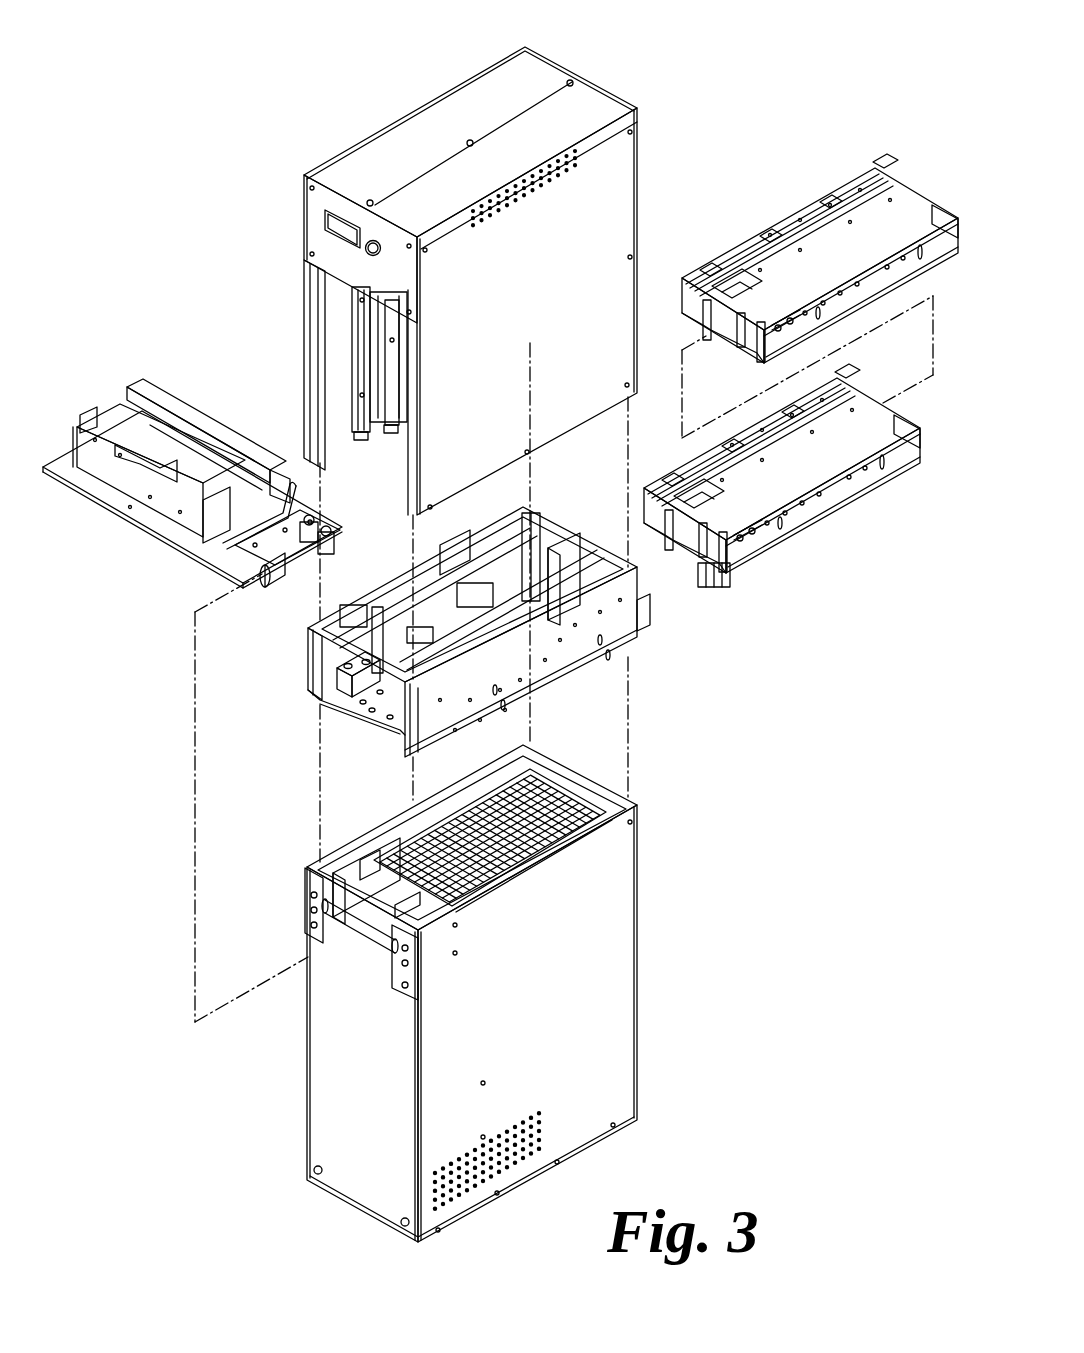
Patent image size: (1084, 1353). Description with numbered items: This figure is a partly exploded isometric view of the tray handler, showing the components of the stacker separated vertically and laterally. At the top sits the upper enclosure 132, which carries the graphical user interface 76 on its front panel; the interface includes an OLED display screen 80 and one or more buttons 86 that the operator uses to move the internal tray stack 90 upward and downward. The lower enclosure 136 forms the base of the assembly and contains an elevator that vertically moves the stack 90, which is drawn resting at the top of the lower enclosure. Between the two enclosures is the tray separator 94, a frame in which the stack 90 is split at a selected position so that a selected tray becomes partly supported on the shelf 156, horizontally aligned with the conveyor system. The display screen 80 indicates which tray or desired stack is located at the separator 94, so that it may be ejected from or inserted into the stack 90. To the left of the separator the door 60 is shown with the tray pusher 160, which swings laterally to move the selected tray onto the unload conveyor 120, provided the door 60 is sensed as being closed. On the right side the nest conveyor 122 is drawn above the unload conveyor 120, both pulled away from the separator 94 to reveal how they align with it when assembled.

The graphical user interface 76 is at (293, 197).
The OLED display screen 80 is at (343, 233).
The buttons 86 is at (381, 257).
The upper enclosure 132 is at (602, 207).
The nest conveyor 122 is at (833, 240).
The unload conveyor 120 is at (837, 490).
The door 60 is at (140, 523).
The tray pusher 160 is at (291, 487).
The shelf 156 is at (478, 637).
The tray separator 94 is at (533, 673).
The internal tray stack 90 is at (572, 797).
The lower enclosure 136 is at (594, 953).